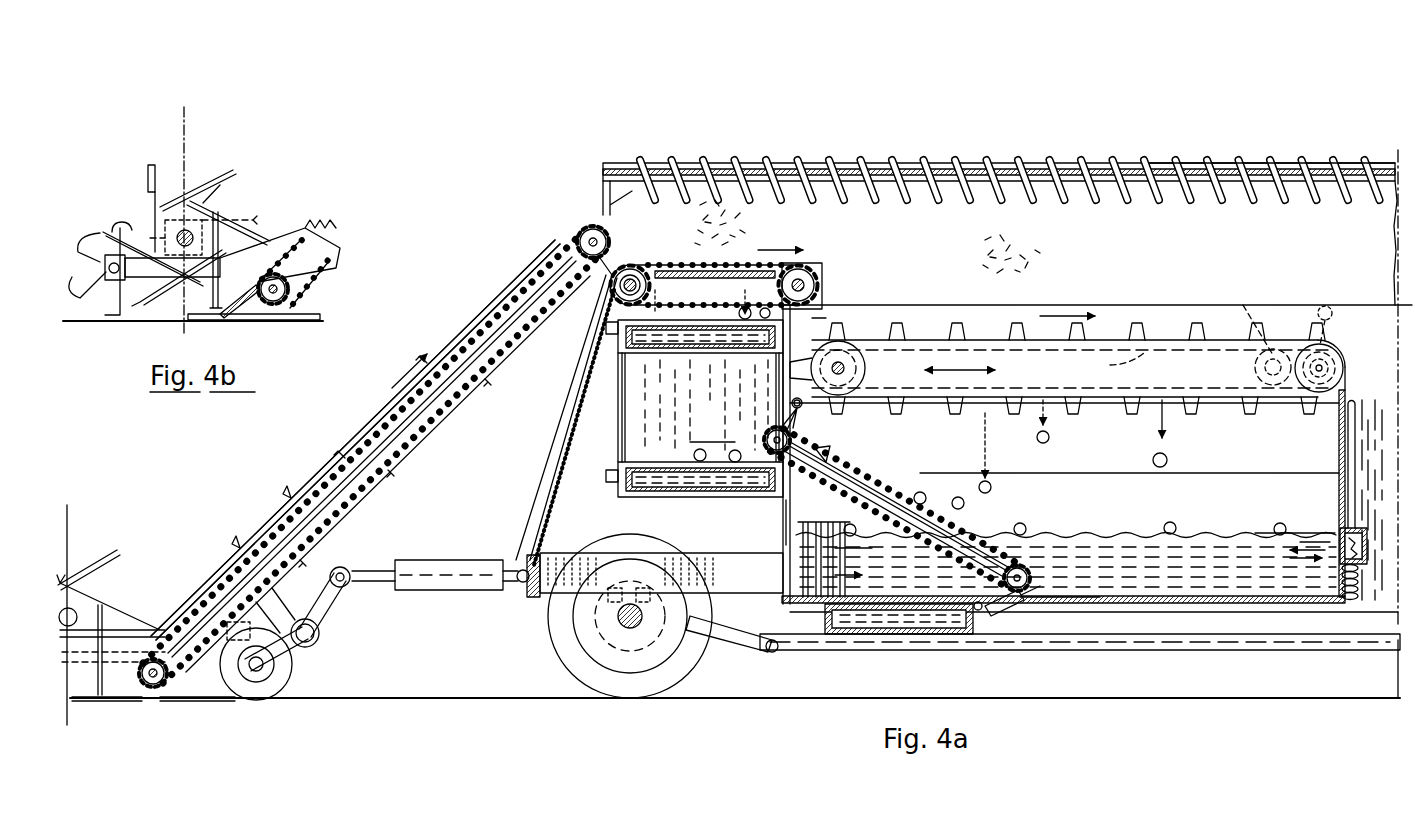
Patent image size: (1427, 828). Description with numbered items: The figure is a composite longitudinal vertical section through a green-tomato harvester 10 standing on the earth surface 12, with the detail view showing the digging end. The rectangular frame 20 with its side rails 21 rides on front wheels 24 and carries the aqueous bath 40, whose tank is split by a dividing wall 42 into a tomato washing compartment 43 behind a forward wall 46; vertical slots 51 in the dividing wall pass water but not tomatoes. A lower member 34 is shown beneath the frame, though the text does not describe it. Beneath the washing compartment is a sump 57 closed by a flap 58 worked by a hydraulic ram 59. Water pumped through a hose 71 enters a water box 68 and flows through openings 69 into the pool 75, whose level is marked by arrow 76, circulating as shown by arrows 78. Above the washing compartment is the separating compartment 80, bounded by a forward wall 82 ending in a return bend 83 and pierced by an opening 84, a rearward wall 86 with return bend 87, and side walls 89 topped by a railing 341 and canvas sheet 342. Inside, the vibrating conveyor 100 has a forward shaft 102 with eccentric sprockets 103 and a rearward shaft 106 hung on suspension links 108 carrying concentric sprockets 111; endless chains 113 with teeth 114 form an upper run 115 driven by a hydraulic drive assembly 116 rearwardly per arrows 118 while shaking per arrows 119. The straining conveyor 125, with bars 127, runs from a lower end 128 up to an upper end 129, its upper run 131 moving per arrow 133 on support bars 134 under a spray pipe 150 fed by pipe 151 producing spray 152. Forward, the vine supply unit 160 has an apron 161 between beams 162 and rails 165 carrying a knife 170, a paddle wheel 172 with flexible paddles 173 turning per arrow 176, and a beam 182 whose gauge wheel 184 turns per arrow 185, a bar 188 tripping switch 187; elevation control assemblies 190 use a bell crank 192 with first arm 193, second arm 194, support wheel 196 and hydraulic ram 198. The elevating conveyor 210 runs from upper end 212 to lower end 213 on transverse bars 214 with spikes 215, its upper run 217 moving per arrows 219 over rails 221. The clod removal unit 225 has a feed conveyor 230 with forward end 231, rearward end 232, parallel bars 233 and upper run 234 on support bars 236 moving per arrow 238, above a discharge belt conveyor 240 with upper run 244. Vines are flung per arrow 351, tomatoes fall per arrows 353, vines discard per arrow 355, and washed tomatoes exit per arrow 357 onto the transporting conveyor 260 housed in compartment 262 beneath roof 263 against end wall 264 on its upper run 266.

In FIG. 4A, the harvester 10 is at (926, 66).
In FIG. 4B, the earth surface 12 is at (317, 321).
In FIG. 4A, the earth surface 12 is at (450, 698).
In FIG. 4A, the frame 20 is at (527, 600).
In FIG. 4A, the side rails 21 is at (1080, 605).
In FIG. 4A, the front wheels 24 is at (572, 665).
In FIG. 4A, the tow bar 34 is at (810, 658).
In FIG. 4A, the aqueous bath 40 is at (1314, 497).
In FIG. 4A, the dividing wall 42 is at (1238, 506).
In FIG. 4A, the tomato washing compartment 43 is at (1093, 496).
In FIG. 4A, the forward wall 46 is at (786, 545).
In FIG. 4A, the vertical slots 51 is at (805, 525).
In FIG. 4A, the sump 57 is at (917, 636).
In FIG. 4A, the flap 58 is at (980, 612).
In FIG. 4A, the hydraulic ram 59 is at (1005, 607).
In FIG. 4A, the water box 68 is at (1367, 540).
In FIG. 4A, the rectangular openings 69 is at (1338, 543).
In FIG. 4A, the hose 71 is at (1352, 600).
In FIG. 4A, the pool 75 is at (1178, 576).
In FIG. 4A, the water level arrow 76 is at (1148, 535).
In FIG. 4A, the circulation arrows 78 is at (855, 548).
In FIG. 4A, the separating compartment 80 is at (1226, 318).
In FIG. 4A, the forward wall 82 is at (817, 312).
In FIG. 4A, the return bend 83 is at (818, 320).
In FIG. 4A, the rectangular opening 84 is at (790, 410).
In FIG. 4A, the rearward wall 86 is at (1339, 445).
In FIG. 4A, the return bend 87 is at (1300, 388).
In FIG. 4A, the side walls 89 is at (1140, 441).
In FIG. 4A, the vibrating conveyor 100 is at (926, 303).
In FIG. 4A, the forward shaft 102 is at (845, 365).
In FIG. 4A, the eccentrically mounted sprockets 103 is at (858, 363).
In FIG. 4A, the rearward shaft 106 is at (1310, 362).
In FIG. 4A, the suspension link 108 is at (1318, 308).
In FIG. 4A, the concentric sprockets 111 is at (1336, 388).
In FIG. 4A, the endless chain 113 is at (1254, 320).
In FIG. 4A, the teeth 114 is at (1130, 322).
In FIG. 4A, the upper run 115 is at (1111, 362).
In FIG. 4A, the hydraulic drive assembly 116 is at (1225, 415).
In FIG. 4A, the conveying direction arrows 118 is at (1062, 322).
In FIG. 4A, the shaking arrows 119 is at (960, 368).
In FIG. 4A, the straining conveyor 125 is at (890, 478).
In FIG. 4A, the bars 127 is at (886, 460).
In FIG. 4A, the lower end 128 is at (1028, 577).
In FIG. 4A, the upper end 129 is at (767, 500).
In FIG. 4A, the upper run 131 is at (962, 505).
In FIG. 4A, the direction arrow 133 is at (960, 498).
In FIG. 4A, the support bars 134 is at (828, 455).
In FIG. 4A, the spray pipe 150 is at (792, 406).
In FIG. 4A, the pipe 151 is at (1256, 370).
In FIG. 4A, the spray 152 is at (805, 410).
In FIG. 4A, the vine supply unit 160 is at (228, 462).
In FIG. 4A, the apron 161 is at (575, 378).
In FIG. 4A, the beams 162 is at (572, 398).
In FIG. 4A, the rails 165 is at (392, 468).
In FIG. 4B, the knife 170 is at (195, 321).
In FIG. 4A, the knife 170 is at (88, 702).
In FIG. 4B, the paddle wheel 172 is at (286, 163).
In FIG. 4A, the paddle wheel 172 is at (105, 535).
In FIG. 4B, the flexible paddles 173 is at (262, 238).
In FIG. 4B, the rotation arrow 176 is at (208, 145).
In FIG. 4B, the beam 182 is at (336, 252).
In FIG. 4B, the gauge wheel 184 is at (85, 298).
In FIG. 4B, the rotation arrow 185 is at (68, 236).
In FIG. 4B, the electric switch 187 is at (167, 217).
In FIG. 4B, the bar 188 is at (167, 222).
In FIG. 4A, the elevation control assemblies 190 is at (348, 548).
In FIG. 4A, the bell crank 192 is at (322, 632).
In FIG. 4A, the first arm 193 is at (333, 603).
In FIG. 4A, the second arm 194 is at (290, 655).
In FIG. 4A, the support wheel 196 is at (247, 693).
In FIG. 4A, the hydraulic ram 198 is at (427, 563).
In FIG. 4A, the vine elevating conveyor 210 is at (445, 332).
In FIG. 4A, the upper end 212 is at (580, 235).
In FIG. 4A, the lower end 213 is at (152, 698).
In FIG. 4A, the transverse bars 214 is at (290, 497).
In FIG. 4A, the spikes 215 is at (427, 363).
In FIG. 4A, the upper run 217 is at (225, 570).
In FIG. 4A, the direction arrows 219 is at (245, 540).
In FIG. 4A, the rails 221 is at (413, 428).
In FIG. 4A, the clod removal unit 225 is at (779, 207).
In FIG. 4A, the feed conveyor 230 is at (655, 250).
In FIG. 4A, the forward end 231 is at (612, 300).
In FIG. 4A, the rearward end 232 is at (812, 265).
In FIG. 4A, the parallel bars 233 is at (695, 262).
In FIG. 4A, the upper run 234 is at (660, 262).
In FIG. 4A, the support bars 236 is at (739, 283).
In FIG. 4A, the direction arrow 238 is at (782, 247).
In FIG. 4A, the discharge belt conveyor 240 is at (640, 337).
In FIG. 4A, the upper run 244 is at (712, 320).
In FIG. 4A, the tomato transporting belt conveyor 260 is at (740, 487).
In FIG. 4A, the rectangular compartment 262 is at (644, 500).
In FIG. 4A, the roof 263 is at (658, 352).
In FIG. 4A, the end wall 264 is at (712, 428).
In FIG. 4A, the upper run 266 is at (622, 465).
In FIG. 4A, the railing 341 is at (1208, 163).
In FIG. 4A, the canvas sheet 342 is at (1325, 250).
In FIG. 4A, the discharge stream arrow 351 is at (860, 285).
In FIG. 4A, the tomato stream arrows 353 is at (1014, 446).
In FIG. 4A, the vine discard arrow 355 is at (1378, 385).
In FIG. 4A, the tomato discharge arrow 357 is at (760, 433).